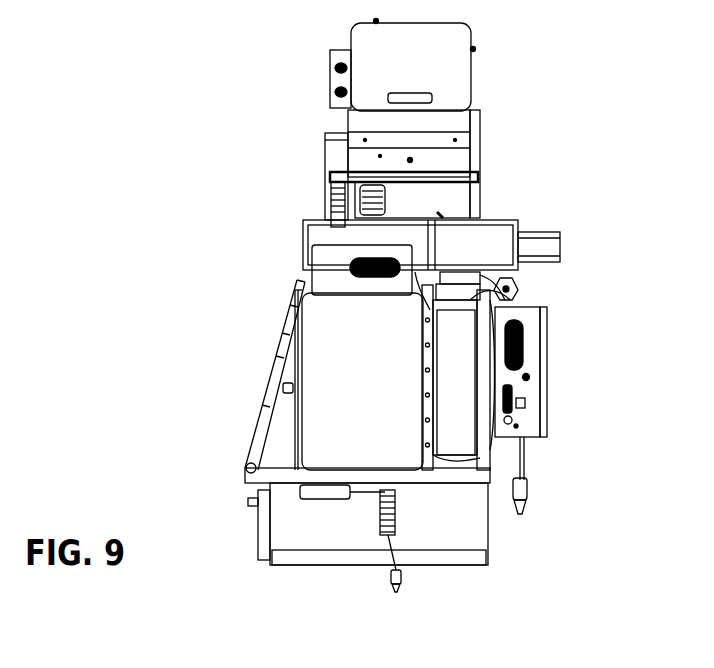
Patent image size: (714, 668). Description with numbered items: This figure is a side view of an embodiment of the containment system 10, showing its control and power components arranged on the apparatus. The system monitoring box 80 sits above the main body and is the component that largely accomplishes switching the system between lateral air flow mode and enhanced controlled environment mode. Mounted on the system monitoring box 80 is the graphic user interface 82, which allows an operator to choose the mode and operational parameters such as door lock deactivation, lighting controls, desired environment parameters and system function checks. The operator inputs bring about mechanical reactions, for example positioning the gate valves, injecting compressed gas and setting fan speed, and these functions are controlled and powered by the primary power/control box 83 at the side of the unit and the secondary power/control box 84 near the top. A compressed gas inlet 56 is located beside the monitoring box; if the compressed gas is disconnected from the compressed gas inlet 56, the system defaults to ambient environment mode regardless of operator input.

The containment system 10 is at (240, 110).
The secondary power/control box 84 is at (330, 78).
The system monitoring box 80 is at (336, 268).
The graphic user interface 82 is at (300, 266).
The compressed gas inlet 56 is at (517, 284).
The primary power/control box 83 is at (524, 394).